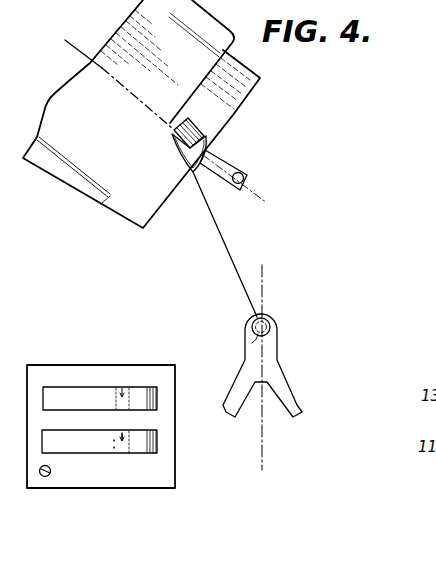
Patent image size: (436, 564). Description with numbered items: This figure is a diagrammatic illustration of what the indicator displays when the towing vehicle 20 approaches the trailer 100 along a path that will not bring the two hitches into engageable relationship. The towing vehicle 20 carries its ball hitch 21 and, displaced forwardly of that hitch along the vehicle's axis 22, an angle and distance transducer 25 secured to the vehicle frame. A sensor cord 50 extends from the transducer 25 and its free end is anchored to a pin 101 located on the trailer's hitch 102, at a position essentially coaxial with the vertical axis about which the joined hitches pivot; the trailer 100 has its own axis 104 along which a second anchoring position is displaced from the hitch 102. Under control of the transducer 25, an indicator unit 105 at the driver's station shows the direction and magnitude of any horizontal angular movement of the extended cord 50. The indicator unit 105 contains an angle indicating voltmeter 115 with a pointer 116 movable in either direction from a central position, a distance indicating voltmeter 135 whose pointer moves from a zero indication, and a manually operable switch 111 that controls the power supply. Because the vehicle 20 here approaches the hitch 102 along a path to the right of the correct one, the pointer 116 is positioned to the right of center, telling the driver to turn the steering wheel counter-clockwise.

The towing vehicle 20 is at (104, 180).
The ball hitch 21 is at (243, 167).
The axis 22 is at (78, 53).
The angle and distance transducer 25 is at (188, 127).
The sensor cord 50 is at (224, 240).
The trailer 100 is at (292, 403).
The pin 101 is at (272, 325).
The hitch 102 is at (255, 342).
The axis 104 is at (264, 447).
The indicator unit 105 is at (134, 362).
The switch 111 is at (44, 478).
The angle indicating voltmeter 115 is at (65, 455).
The pointer 116 is at (126, 440).
The distance indicating voltmeter 135 is at (67, 390).